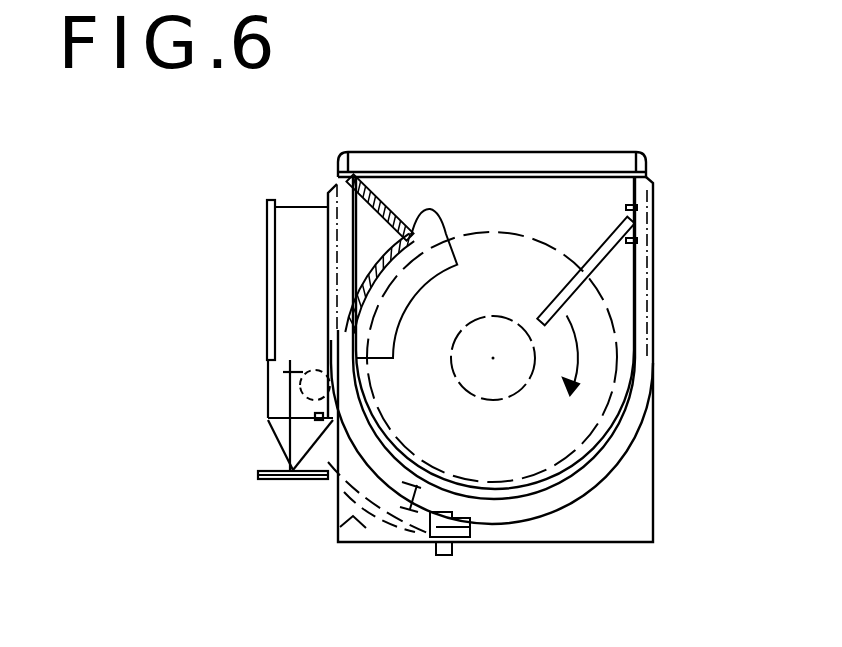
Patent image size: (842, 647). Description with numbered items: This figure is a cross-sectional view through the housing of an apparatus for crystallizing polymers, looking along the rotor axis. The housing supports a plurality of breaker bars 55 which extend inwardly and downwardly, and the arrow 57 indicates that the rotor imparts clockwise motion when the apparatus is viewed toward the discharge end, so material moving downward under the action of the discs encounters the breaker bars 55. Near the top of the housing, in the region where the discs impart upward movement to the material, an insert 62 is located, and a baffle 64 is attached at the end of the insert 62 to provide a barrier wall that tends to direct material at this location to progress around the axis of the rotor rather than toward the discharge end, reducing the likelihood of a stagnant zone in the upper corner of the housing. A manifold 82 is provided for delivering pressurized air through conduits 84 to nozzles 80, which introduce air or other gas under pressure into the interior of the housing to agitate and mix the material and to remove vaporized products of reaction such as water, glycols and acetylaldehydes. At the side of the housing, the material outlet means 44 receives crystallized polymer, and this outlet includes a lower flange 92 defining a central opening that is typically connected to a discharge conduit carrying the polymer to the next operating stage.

The material outlet means 44 is at (267, 241).
The breaker bars 55 is at (614, 240).
The arrow 57 is at (583, 361).
The insert 62 is at (381, 186).
The baffle 64 is at (437, 228).
The nozzles 80 is at (460, 545).
The manifold 82 is at (324, 382).
The conduits 84 is at (338, 532).
The lower flange 92 is at (260, 478).